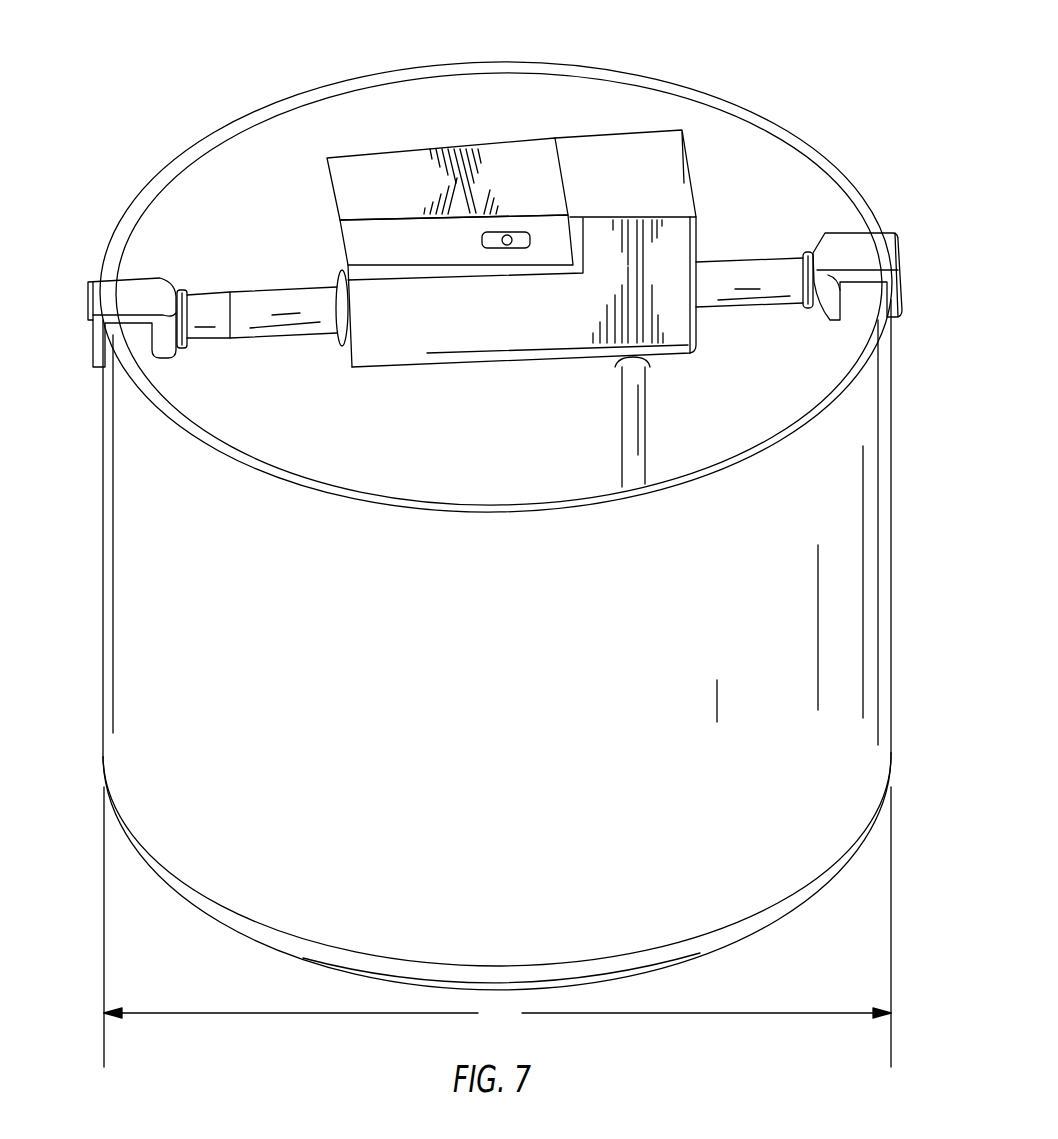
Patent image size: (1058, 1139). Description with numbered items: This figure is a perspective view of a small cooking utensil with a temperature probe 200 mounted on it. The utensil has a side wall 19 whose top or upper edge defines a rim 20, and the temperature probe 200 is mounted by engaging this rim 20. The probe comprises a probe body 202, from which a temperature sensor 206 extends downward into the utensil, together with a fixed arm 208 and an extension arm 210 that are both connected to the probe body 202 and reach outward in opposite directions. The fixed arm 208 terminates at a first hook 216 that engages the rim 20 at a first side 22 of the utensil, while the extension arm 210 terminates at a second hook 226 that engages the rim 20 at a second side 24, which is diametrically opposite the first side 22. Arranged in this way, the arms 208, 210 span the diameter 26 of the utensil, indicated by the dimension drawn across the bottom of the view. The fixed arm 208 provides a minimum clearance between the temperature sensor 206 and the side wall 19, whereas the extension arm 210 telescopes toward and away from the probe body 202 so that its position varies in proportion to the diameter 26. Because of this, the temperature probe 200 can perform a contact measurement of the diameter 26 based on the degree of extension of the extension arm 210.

The side wall 19 is at (482, 704).
The rim 20 is at (798, 150).
The first side 22 is at (890, 502).
The second side 24 is at (118, 568).
The diameter 26 is at (497, 927).
The temperature probe 200 is at (530, 97).
The probe body 202 is at (637, 147).
The temperature sensor 206 is at (627, 430).
The fixed arm 208 is at (743, 267).
The extension arm 210 is at (210, 308).
The first hook 216 is at (870, 253).
The second hook 226 is at (122, 288).